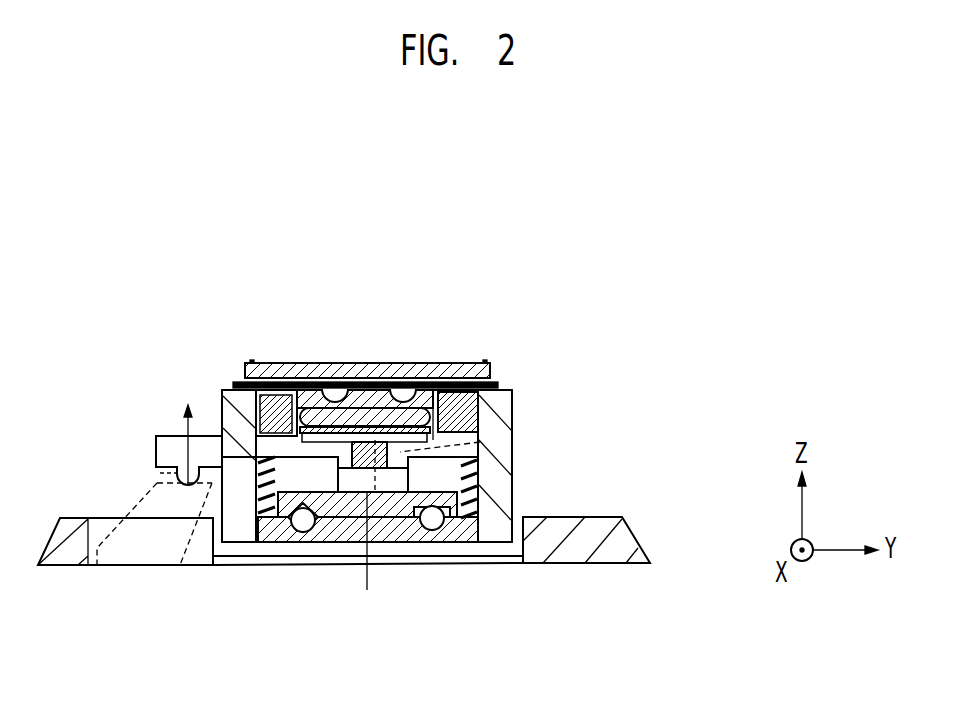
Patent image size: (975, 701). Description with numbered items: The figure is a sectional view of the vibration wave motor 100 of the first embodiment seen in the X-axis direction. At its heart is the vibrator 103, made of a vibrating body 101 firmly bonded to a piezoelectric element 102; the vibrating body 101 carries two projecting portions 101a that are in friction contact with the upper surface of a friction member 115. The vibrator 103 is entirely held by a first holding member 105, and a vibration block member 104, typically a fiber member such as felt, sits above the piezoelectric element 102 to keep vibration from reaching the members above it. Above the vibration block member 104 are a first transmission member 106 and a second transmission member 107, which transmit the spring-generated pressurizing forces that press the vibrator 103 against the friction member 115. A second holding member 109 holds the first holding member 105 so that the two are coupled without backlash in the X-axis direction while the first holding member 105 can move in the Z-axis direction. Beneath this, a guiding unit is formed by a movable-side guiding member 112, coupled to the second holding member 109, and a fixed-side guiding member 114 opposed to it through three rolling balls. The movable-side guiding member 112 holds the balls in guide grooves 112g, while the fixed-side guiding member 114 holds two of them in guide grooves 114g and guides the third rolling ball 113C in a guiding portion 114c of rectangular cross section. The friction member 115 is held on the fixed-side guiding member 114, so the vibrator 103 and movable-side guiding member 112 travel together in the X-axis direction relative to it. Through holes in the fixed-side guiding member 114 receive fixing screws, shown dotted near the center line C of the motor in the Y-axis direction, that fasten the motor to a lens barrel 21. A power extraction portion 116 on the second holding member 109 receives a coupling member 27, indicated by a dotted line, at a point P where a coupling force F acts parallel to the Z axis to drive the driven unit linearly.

The vibration wave motor 100 is at (137, 248).
The lens barrel 21 is at (626, 542).
The coupling member 27 is at (127, 503).
The power extraction portion 116 is at (165, 480).
The coupling force F is at (187, 422).
The point (coupling position) P is at (187, 482).
The second holding member 109 is at (222, 392).
The first holding member 105 is at (290, 384).
The second transmission member 107 is at (310, 400).
The first transmission member 106 is at (330, 395).
The vibration block member 104 is at (368, 408).
The projecting portions 101a is at (388, 420).
The piezoelectric element 102 is at (415, 384).
The vibrating body 101 is at (450, 376).
The vibrator 103 is at (533, 288).
The friction member 115 is at (478, 470).
The fixed-side guiding member 114 is at (478, 508).
The guide grooves 114g is at (298, 523).
The movable-side guiding member 112 is at (396, 545).
The guide grooves 112g is at (312, 541).
The rolling ball 113C is at (432, 532).
The guiding portion 114c is at (462, 541).
The center line C is at (366, 556).